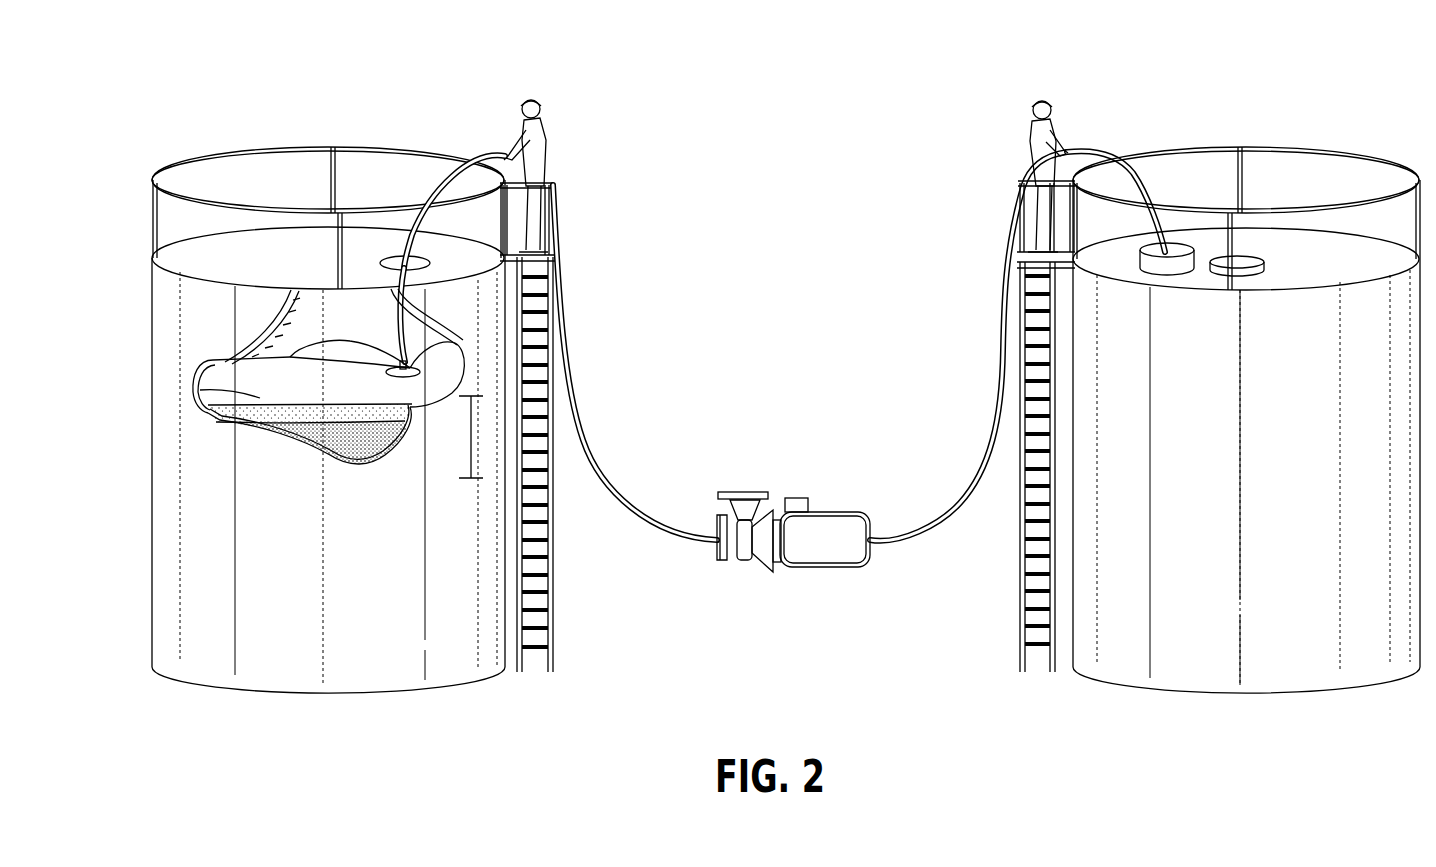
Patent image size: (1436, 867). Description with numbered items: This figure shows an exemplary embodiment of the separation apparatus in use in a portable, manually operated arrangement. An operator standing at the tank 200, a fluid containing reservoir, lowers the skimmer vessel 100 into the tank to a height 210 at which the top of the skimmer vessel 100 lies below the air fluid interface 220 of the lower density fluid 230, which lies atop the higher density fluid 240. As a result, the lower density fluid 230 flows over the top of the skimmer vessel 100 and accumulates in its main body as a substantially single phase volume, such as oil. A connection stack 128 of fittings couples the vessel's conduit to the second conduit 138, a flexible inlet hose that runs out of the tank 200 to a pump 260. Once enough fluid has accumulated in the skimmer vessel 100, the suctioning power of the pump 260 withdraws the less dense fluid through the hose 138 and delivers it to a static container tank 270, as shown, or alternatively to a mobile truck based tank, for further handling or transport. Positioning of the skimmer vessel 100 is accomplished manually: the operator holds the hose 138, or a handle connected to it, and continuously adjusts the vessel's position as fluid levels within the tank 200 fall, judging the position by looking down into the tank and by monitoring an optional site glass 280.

The skimmer vessel 100 is at (445, 346).
The connection stack 128 is at (205, 382).
The second conduit 138 is at (553, 243).
The tank 200 is at (758, 370).
The height 210 is at (217, 423).
The air fluid interface 220 is at (398, 376).
The lower density fluid 230 is at (462, 373).
The higher density fluid 240 is at (413, 433).
The pump 260 is at (795, 497).
The tank 270 is at (1087, 633).
The site glass 280 is at (468, 447).